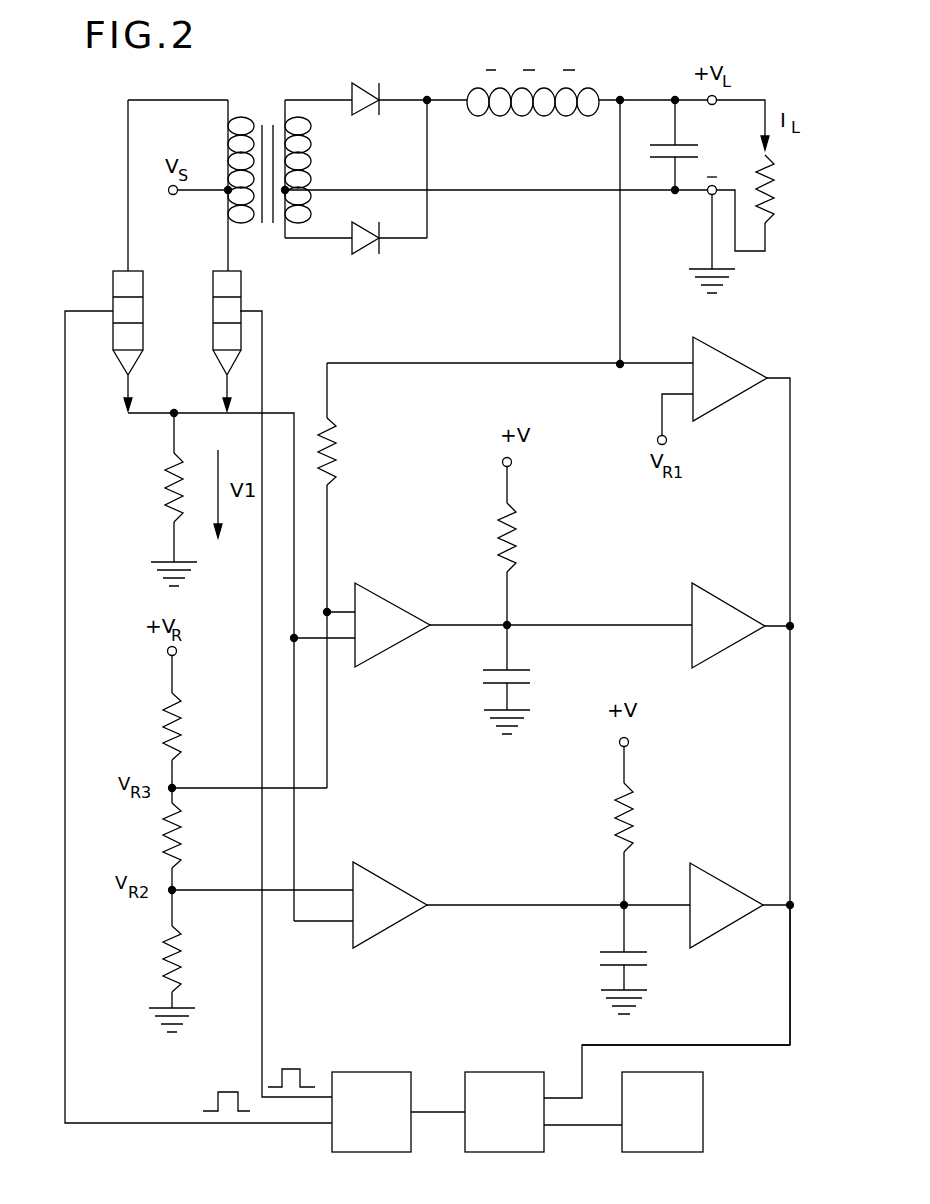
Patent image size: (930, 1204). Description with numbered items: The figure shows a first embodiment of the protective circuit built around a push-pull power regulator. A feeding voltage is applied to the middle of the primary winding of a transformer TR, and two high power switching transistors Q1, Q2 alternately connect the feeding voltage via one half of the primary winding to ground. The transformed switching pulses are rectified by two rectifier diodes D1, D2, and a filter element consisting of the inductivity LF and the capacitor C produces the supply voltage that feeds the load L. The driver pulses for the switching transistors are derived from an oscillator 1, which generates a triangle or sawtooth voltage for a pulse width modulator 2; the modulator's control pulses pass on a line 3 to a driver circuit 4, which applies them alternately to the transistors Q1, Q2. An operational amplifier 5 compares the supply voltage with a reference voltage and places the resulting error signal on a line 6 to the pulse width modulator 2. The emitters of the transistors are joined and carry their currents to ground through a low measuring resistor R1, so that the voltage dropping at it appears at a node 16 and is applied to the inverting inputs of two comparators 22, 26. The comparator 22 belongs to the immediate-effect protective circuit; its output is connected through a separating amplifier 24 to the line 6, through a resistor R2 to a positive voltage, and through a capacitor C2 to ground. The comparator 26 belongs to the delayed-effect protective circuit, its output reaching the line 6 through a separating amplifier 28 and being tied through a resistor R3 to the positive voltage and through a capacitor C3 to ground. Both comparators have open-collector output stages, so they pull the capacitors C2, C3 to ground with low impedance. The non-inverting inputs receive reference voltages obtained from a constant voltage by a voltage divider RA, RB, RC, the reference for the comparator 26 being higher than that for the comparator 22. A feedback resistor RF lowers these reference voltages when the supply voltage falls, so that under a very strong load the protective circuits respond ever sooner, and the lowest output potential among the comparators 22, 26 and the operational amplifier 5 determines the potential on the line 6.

The oscillator 1 is at (690, 1092).
The pulse width modulator 2 is at (485, 1082).
The line 3 is at (437, 1112).
The driver circuit 4 is at (368, 1080).
The operational amplifier 5 is at (740, 356).
The line 6 is at (788, 950).
The current feedback signal line 16 is at (294, 413).
The comparator 22 is at (405, 878).
The separating amplifier 24 is at (712, 883).
The comparator 26 is at (380, 598).
The separating amplifier 28 is at (708, 605).
The transformer TR is at (269, 152).
The rectifier diode D1 is at (356, 92).
The rectifier diode D2 is at (357, 248).
The inductivity LF is at (533, 115).
The capacitor C is at (667, 145).
The load L is at (765, 170).
The switching transistor Q1 is at (142, 331).
The switching transistor Q2 is at (242, 331).
The measuring resistor R1 is at (172, 465).
The feedback resistor RF is at (341, 575).
The resistor R3 is at (512, 548).
The capacitor C3 is at (515, 672).
The voltage divider resistor RA is at (187, 725).
The voltage divider resistor RB is at (188, 864).
The voltage divider resistor RC is at (180, 979).
The resistor R2 is at (630, 828).
The capacitor C2 is at (608, 952).